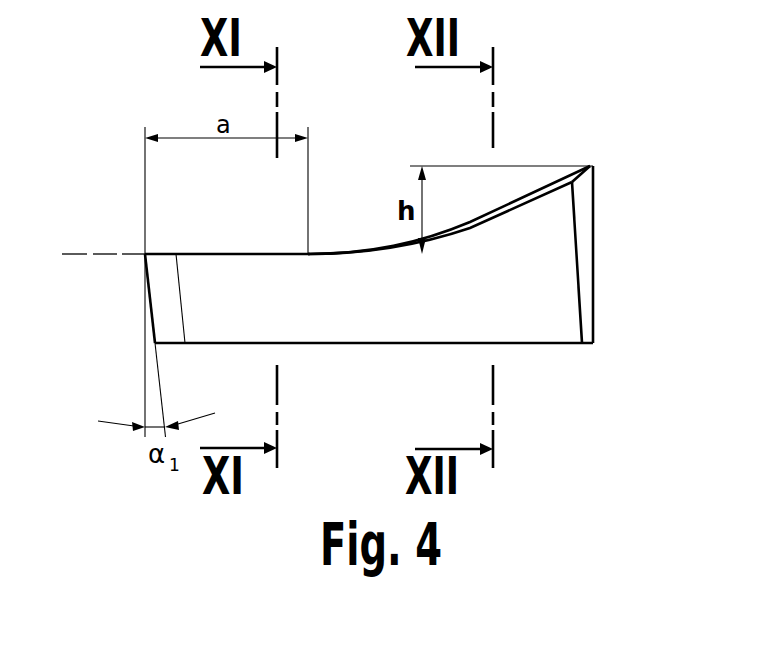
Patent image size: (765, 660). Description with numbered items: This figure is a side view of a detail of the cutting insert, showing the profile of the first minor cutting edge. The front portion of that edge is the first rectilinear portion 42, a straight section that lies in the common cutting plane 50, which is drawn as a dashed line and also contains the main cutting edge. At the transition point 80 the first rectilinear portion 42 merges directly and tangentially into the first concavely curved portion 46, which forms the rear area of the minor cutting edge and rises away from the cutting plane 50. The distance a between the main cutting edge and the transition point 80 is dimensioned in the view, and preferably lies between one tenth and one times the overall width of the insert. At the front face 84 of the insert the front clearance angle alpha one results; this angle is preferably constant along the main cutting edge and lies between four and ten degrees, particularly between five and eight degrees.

The cutting plane 50 is at (68, 254).
The first rectilinear portion 42 is at (238, 256).
The front face 84 is at (148, 312).
The transition point 80 is at (310, 256).
The first concavely curved portion 46 is at (527, 203).